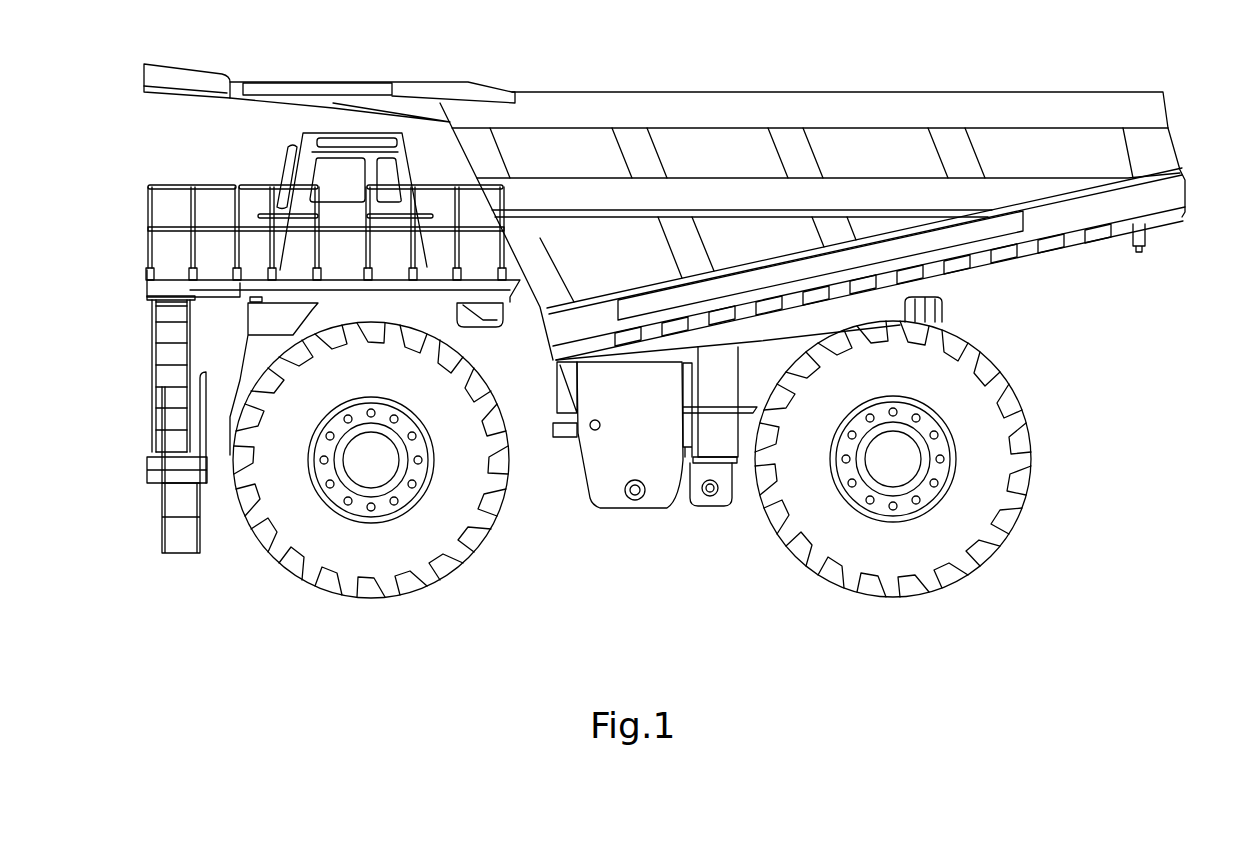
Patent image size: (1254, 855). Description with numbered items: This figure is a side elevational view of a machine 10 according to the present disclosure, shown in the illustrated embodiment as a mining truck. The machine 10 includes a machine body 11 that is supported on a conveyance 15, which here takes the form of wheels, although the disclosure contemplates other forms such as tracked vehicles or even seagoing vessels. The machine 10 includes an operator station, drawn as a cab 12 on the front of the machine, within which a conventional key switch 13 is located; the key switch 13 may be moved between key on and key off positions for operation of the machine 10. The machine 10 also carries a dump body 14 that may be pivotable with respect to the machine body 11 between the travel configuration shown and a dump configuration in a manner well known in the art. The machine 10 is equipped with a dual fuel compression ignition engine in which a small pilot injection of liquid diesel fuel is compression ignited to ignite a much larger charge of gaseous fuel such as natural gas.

The machine 10 is at (778, 47).
The machine body 11 is at (553, 428).
The operator cab 12 is at (303, 134).
The key switch 13 is at (312, 193).
The dump body 14 is at (1170, 107).
The conveyance 15 is at (1027, 455).